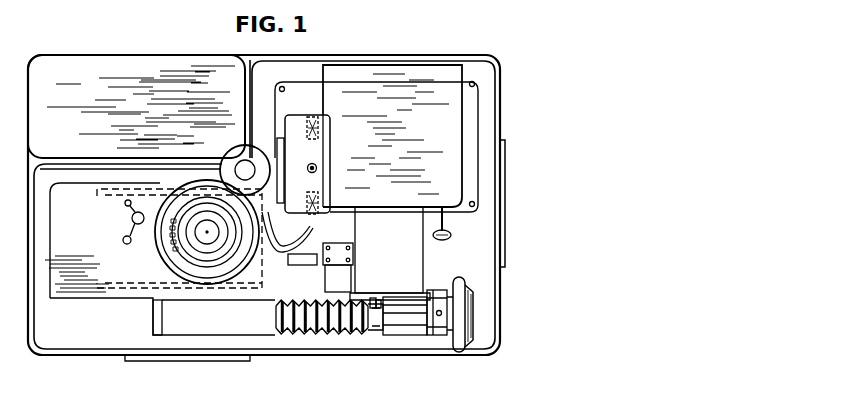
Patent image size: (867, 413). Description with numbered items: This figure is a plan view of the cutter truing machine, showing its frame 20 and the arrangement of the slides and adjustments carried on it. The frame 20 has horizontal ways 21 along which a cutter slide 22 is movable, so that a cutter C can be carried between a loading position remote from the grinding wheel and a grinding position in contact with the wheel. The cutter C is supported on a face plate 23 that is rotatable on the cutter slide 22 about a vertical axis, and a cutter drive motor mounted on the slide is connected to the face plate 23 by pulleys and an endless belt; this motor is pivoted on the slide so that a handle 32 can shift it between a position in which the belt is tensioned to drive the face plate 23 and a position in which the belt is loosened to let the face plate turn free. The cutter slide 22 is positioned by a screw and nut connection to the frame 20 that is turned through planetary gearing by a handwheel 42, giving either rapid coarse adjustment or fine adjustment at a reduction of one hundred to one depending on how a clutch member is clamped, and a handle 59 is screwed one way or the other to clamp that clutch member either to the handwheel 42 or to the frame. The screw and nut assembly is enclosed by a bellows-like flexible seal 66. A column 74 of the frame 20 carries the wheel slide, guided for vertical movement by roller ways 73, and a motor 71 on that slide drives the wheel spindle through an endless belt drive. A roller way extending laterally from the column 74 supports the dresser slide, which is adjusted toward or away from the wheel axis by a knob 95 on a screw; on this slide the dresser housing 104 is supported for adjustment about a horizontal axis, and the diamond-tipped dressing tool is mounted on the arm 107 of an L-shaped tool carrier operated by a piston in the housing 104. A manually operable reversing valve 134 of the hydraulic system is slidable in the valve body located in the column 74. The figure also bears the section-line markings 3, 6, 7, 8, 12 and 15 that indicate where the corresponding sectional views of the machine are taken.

The frame 20 is at (92, 339).
The horizontal ways 21 is at (103, 287).
The cutter slide 22 is at (150, 276).
The face plate 23 is at (208, 277).
The handle 32 is at (130, 220).
The handwheel 42 is at (470, 310).
The handle 59 is at (438, 318).
The bellows-like flexible seal 66 is at (340, 335).
The motor 71 is at (246, 150).
The roller ways 73 is at (314, 124).
The column 74 is at (409, 130).
The knob 95 is at (378, 340).
The dresser housing 104 is at (327, 276).
The arm 107 is at (290, 260).
The reversing valve 134 is at (457, 223).
The cutter C is at (157, 238).
The section line 3- 3 is at (142, 312).
The section line 6- 6 is at (395, 170).
The section line 7- 7 is at (373, 345).
The section line 8- 8 is at (333, 203).
The section line 12- 12 is at (360, 262).
The section line 15- 15 is at (445, 272).